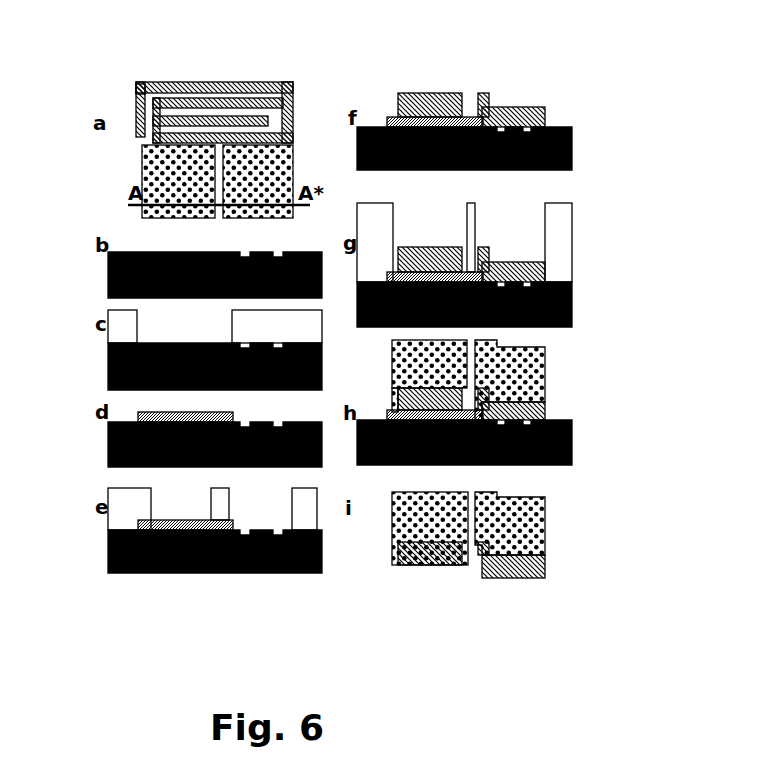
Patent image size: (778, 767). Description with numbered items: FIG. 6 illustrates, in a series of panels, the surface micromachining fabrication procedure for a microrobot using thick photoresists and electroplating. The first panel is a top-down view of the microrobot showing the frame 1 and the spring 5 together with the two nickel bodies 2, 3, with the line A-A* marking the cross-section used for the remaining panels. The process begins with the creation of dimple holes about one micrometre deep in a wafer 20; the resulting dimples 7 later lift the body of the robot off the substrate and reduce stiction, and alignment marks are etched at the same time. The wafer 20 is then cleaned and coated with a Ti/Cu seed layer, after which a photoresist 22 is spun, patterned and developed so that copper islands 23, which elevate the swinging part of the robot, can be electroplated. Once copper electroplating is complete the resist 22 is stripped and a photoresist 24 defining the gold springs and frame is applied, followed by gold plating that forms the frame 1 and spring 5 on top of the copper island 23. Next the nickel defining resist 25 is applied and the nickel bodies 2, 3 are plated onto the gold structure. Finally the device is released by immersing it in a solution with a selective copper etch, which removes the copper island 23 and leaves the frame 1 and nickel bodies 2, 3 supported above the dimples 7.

The frame 1 is at (215, 82).
The nickel body 2 is at (285, 155).
The nickel body 3 is at (145, 176).
The spring 5 is at (142, 88).
The dimple 7 is at (534, 577).
The wafer 20 is at (108, 278).
The photoresist 22 is at (102, 332).
The copper island 23 is at (138, 416).
The photoresist 24 is at (108, 490).
The nickel defining resist 25 is at (552, 248).